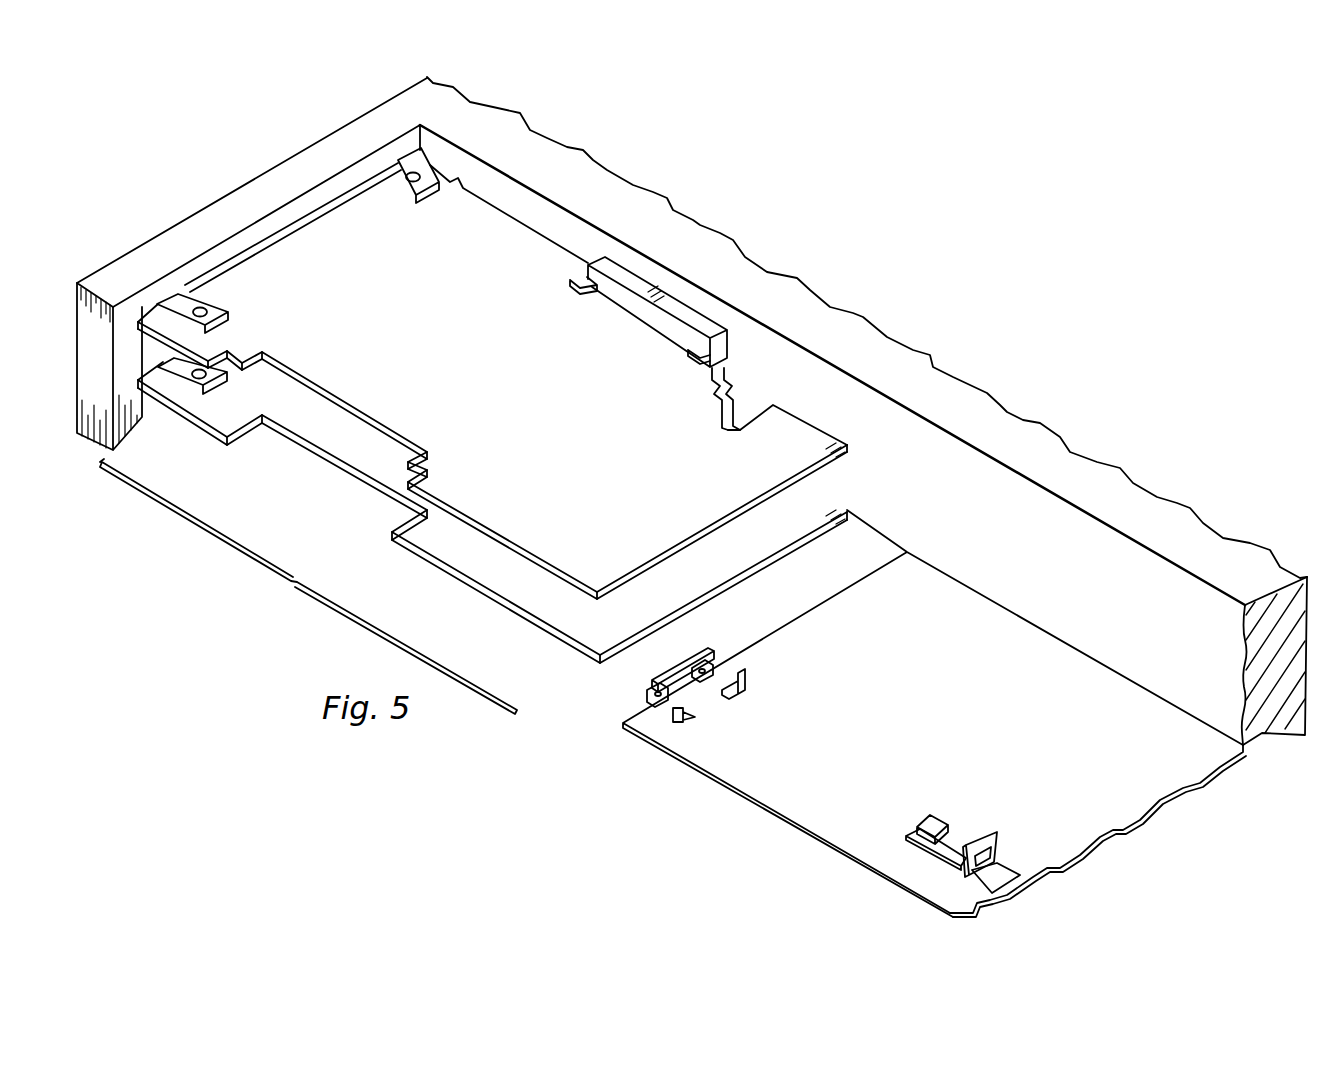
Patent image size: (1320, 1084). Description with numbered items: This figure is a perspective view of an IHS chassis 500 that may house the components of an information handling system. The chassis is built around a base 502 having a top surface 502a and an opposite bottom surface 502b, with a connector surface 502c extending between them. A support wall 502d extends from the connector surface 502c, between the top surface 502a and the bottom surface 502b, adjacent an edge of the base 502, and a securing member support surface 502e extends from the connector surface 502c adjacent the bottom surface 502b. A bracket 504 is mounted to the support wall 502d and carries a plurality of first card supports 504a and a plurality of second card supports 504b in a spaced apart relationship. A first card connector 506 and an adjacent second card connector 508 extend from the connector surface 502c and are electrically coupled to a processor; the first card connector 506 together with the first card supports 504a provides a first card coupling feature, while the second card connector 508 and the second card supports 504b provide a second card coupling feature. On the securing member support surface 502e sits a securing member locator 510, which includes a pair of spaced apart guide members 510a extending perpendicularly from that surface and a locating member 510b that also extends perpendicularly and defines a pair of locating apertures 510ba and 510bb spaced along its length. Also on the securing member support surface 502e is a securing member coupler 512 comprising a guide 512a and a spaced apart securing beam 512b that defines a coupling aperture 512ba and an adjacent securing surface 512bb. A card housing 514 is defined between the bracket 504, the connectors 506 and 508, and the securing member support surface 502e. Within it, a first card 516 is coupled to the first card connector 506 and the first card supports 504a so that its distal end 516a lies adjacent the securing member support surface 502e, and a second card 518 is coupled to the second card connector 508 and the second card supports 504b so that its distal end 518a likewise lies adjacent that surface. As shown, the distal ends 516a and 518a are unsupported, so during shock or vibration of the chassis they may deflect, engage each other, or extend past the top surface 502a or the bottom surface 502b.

The IHS chassis 500 is at (869, 232).
The base 502 is at (307, 149).
The top surface 502a is at (892, 348).
The bottom surface 502b is at (1262, 735).
The connector surface 502c is at (1027, 498).
The support wall 502d is at (165, 243).
The securing member support surface 502e is at (1197, 729).
The bracket 504 is at (267, 235).
The first card supports 504a is at (423, 198).
The second card supports 504b is at (213, 380).
The first card connector 506 is at (722, 347).
The second card connector 508 is at (737, 417).
The securing member locator 510 is at (621, 711).
The guide members 510a is at (743, 677).
The locating member 510b is at (682, 681).
The locating aperture 510ba is at (653, 681).
The locating aperture 510bb is at (708, 658).
The securing member coupler 512 is at (975, 786).
The guide 512a is at (927, 823).
The securing beam 512b is at (997, 840).
The coupling aperture 512ba is at (997, 849).
The securing surface 512bb is at (960, 848).
The card housing 514 is at (308, 586).
The first card 516 is at (500, 362).
The distal end 516a is at (827, 460).
The second card 518 is at (337, 461).
The distal end 518a is at (777, 550).